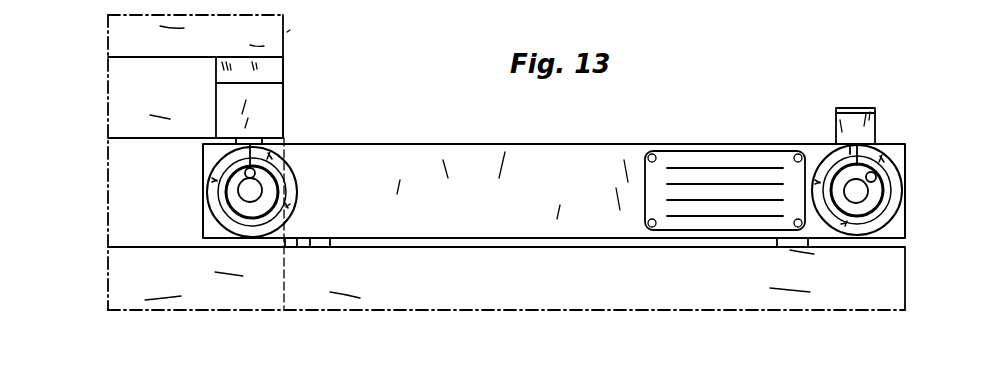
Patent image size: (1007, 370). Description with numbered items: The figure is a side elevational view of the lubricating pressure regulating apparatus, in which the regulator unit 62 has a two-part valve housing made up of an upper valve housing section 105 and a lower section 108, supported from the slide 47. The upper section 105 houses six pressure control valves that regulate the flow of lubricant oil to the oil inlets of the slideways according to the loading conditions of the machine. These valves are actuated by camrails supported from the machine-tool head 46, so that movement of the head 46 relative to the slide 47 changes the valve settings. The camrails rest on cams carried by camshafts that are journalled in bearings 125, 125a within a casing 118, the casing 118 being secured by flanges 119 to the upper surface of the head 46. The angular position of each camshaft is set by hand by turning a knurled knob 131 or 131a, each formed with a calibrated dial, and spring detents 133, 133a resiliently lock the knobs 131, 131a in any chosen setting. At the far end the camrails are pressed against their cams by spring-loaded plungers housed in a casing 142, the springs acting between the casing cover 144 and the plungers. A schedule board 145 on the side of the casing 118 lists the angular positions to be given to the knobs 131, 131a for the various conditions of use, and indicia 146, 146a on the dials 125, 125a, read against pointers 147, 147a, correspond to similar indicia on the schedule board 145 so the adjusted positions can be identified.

The machine-tool head 46 is at (126, 266).
The slide 47 is at (118, 40).
The regulator unit 62 is at (615, 135).
The upper valve housing section 105 is at (274, 72).
The valve housing section 108 is at (272, 109).
The casing 118 is at (524, 144).
The flanges 119 is at (301, 248).
The bearing 125 is at (208, 197).
The bearing 125a is at (894, 198).
The knurled knob 131 is at (258, 191).
The knurled knob 131a is at (872, 206).
The spring detent 133 is at (256, 174).
The spring detent 133a is at (876, 179).
The casing 142 is at (870, 124).
The casing cover 144 is at (866, 108).
The schedule board 145 is at (709, 160).
The indicia 146 is at (240, 148).
The indicia 146a is at (858, 147).
The pointer 147 is at (262, 162).
The pointer 147a is at (862, 162).